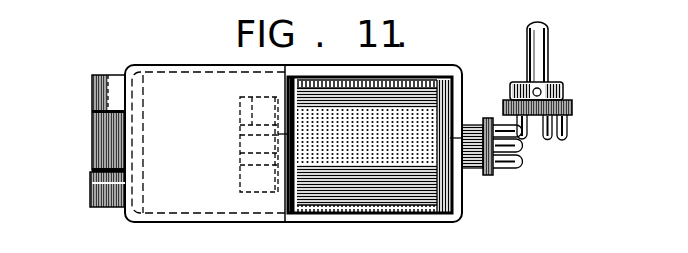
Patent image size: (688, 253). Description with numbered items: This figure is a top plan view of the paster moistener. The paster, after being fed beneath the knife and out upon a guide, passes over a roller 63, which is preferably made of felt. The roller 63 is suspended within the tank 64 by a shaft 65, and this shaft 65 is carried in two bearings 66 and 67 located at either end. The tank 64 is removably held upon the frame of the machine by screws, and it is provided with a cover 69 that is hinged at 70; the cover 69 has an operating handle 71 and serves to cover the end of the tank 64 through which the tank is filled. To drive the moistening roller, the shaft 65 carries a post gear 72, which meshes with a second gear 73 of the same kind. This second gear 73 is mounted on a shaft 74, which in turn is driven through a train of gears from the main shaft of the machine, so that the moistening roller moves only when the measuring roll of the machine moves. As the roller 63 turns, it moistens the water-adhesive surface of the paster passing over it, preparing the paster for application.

The roller 63 is at (423, 76).
The tank 64 is at (458, 100).
The shaft 65 is at (240, 143).
The bearing 66 is at (250, 96).
The bearing 67 is at (453, 197).
The cover 69 is at (190, 198).
The hinge 70 is at (91, 193).
The operating handle 71 is at (93, 143).
The post gear 72 is at (493, 174).
The second gear 73 is at (537, 138).
The shaft 74 is at (548, 57).